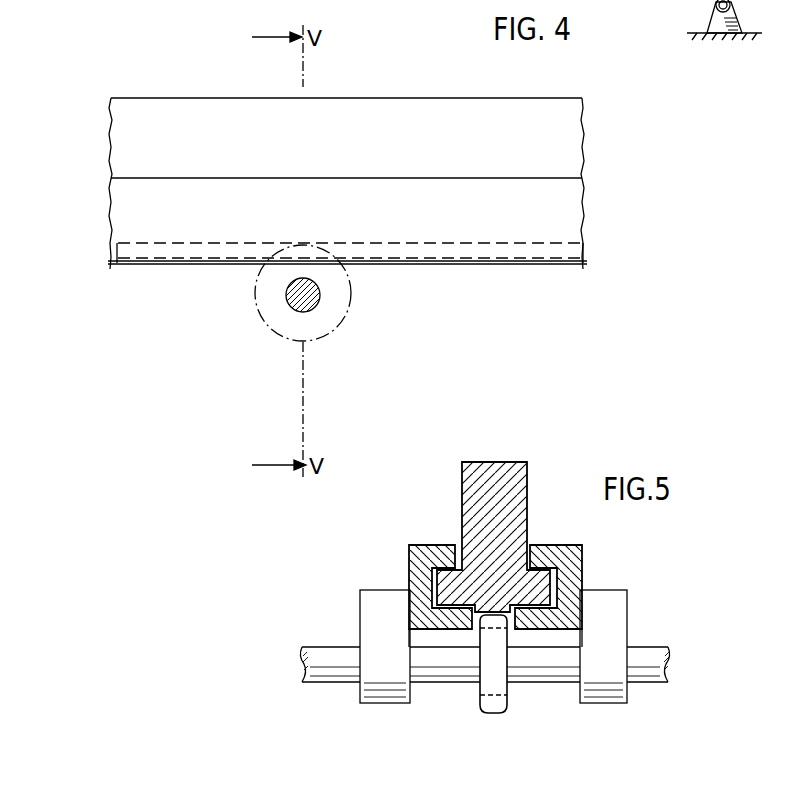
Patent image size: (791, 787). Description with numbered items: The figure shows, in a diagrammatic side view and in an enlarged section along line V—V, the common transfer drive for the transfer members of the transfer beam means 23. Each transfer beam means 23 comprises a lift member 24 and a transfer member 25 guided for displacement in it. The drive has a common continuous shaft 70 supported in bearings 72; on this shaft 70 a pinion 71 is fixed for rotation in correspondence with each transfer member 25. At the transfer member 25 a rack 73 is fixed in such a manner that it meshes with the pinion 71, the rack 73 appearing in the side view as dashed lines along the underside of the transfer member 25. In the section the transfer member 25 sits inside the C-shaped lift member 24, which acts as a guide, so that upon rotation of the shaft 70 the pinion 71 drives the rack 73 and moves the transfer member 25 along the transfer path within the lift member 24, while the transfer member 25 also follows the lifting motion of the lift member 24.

In FIG. 4, the transfer beam means 23 is at (411, 270).
In FIG. 5, the transfer beam means 23 is at (568, 548).
In FIG. 4, the lift member 24 is at (124, 232).
In FIG. 5, the lift member 24 is at (568, 568).
In FIG. 4, the transfer member 25 is at (137, 124).
In FIG. 5, the transfer member 25 is at (508, 490).
In FIG. 4, the shaft 70 is at (312, 308).
In FIG. 5, the shaft 70 is at (445, 668).
In FIG. 4, the pinion 71 is at (268, 331).
In FIG. 5, the pinion 71 is at (497, 713).
In FIG. 5, the bearings 72 is at (392, 674).
In FIG. 4, the rack 73 is at (584, 250).
In FIG. 5, the rack 73 is at (507, 626).